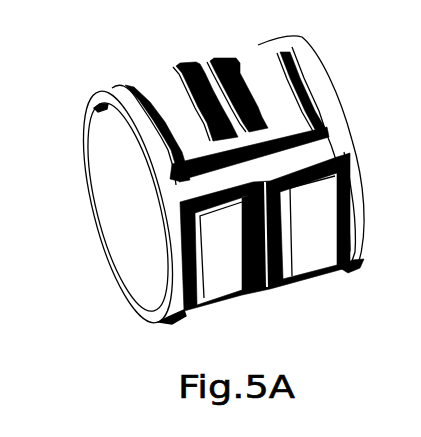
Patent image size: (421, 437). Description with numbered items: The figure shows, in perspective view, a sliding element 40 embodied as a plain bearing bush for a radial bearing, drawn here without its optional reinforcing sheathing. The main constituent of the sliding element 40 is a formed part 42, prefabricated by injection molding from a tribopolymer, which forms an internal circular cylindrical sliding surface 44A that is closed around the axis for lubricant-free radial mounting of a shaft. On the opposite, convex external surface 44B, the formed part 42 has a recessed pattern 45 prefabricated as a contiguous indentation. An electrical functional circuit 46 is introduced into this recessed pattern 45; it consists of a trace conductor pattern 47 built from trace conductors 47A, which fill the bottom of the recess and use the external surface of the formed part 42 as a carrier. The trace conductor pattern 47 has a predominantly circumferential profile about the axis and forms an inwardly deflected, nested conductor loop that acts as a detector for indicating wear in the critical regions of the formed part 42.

The sliding element 40 is at (103, 89).
The formed part 42 is at (160, 313).
The sliding surface 44A is at (163, 283).
The external surface 44B is at (352, 274).
The recessed pattern 45 is at (287, 54).
The electrical functional circuit 46 is at (280, 289).
The trace conductor pattern 47 is at (176, 71).
The trace conductors 47A is at (327, 133).